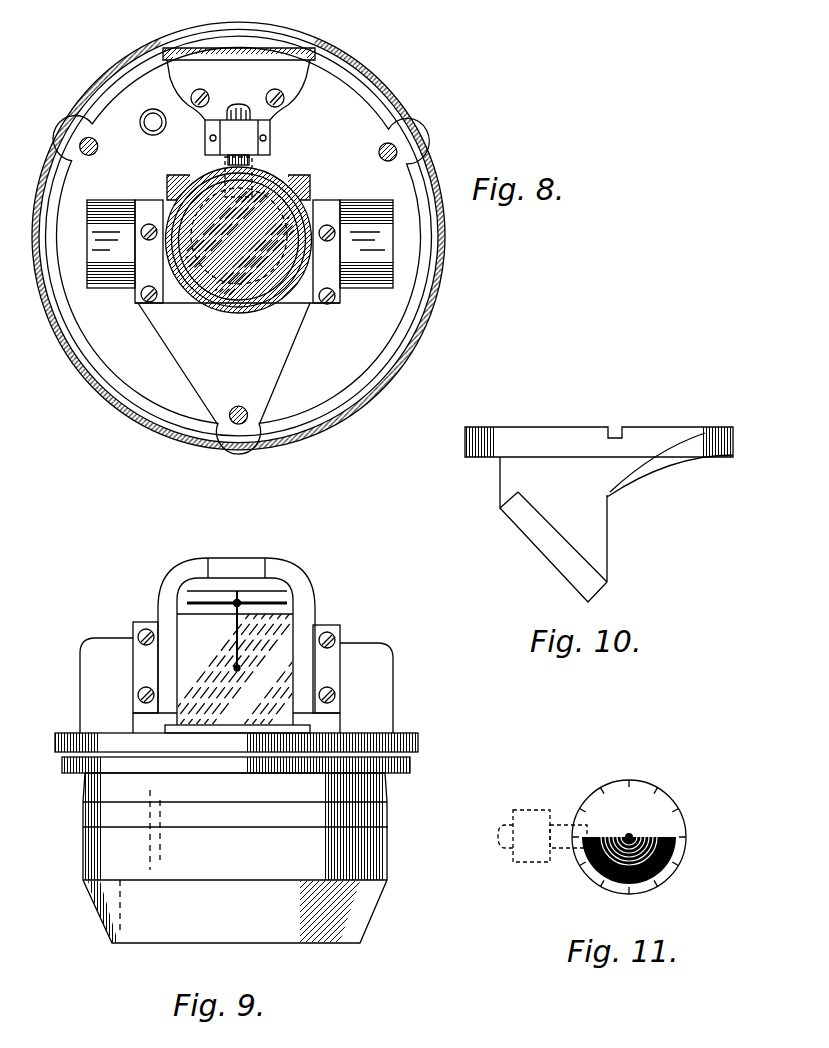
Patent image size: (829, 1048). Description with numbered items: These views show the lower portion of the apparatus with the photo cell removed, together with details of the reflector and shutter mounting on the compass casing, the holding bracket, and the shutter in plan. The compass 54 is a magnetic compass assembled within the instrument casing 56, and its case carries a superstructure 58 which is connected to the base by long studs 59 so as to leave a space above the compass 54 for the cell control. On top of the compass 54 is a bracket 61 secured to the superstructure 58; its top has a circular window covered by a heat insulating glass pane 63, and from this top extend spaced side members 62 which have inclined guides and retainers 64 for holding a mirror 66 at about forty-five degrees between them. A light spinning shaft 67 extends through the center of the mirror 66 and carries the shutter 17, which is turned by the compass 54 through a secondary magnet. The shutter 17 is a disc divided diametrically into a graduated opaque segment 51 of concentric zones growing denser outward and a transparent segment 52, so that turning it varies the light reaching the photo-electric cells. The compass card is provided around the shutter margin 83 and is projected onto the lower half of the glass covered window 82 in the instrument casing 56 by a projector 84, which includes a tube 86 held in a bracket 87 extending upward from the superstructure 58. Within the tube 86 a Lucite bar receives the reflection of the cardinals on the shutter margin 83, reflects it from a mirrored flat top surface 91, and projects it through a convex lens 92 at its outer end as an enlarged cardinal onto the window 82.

In FIG. 9, the shutter 17 is at (197, 591).
In FIG. 11, the shutter 17 is at (678, 813).
In FIG. 11, the graduated opaque segment 51 is at (618, 883).
In FIG. 11, the transparent segment 52 is at (640, 808).
In FIG. 8, the compass 54 is at (93, 351).
In FIG. 9, the compass 54 is at (397, 837).
In FIG. 8, the instrument casing 56 is at (433, 298).
In FIG. 8, the superstructure 58 is at (382, 240).
In FIG. 9, the superstructure 58 is at (80, 662).
In FIG. 8, the long studs 59 is at (80, 140).
In FIG. 8, the bracket 61 is at (172, 273).
In FIG. 9, the bracket 61 is at (167, 614).
In FIG. 10, the bracket 61 is at (672, 448).
In FIG. 9, the side members 62 is at (305, 676).
In FIG. 10, the side members 62 is at (602, 518).
In FIG. 8, the glass pane 63 is at (268, 280).
In FIG. 9, the glass pane 63 is at (200, 583).
In FIG. 8, the inclined guides and retainers 64 is at (336, 305).
In FIG. 9, the inclined guides and retainers 64 is at (333, 657).
In FIG. 10, the inclined guides and retainers 64 is at (597, 585).
In FIG. 9, the mirror 66 is at (280, 628).
In FIG. 9, the spinning shaft 67 is at (235, 625).
In FIG. 8, the window 82 is at (226, 48).
In FIG. 8, the shutter margin 83 is at (202, 287).
In FIG. 11, the shutter margin 83 is at (608, 777).
In FIG. 8, the projector 84 is at (235, 112).
In FIG. 11, the projector 84 is at (526, 833).
In FIG. 8, the tube 86 is at (252, 160).
In FIG. 11, the tube 86 is at (510, 848).
In FIG. 8, the bracket 87 is at (265, 138).
In FIG. 11, the bracket 87 is at (528, 862).
In FIG. 11, the flat top surface 91 is at (690, 822).
In FIG. 8, the convex lens 92 is at (240, 104).
In FIG. 11, the convex lens 92 is at (503, 835).